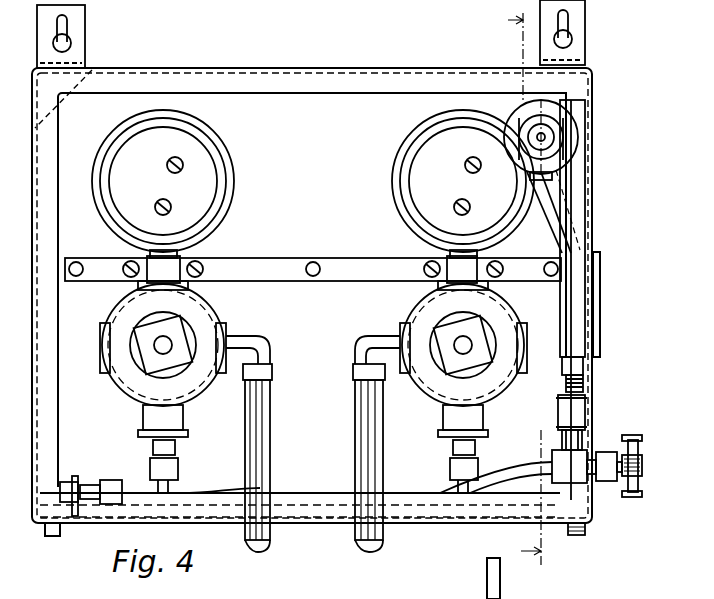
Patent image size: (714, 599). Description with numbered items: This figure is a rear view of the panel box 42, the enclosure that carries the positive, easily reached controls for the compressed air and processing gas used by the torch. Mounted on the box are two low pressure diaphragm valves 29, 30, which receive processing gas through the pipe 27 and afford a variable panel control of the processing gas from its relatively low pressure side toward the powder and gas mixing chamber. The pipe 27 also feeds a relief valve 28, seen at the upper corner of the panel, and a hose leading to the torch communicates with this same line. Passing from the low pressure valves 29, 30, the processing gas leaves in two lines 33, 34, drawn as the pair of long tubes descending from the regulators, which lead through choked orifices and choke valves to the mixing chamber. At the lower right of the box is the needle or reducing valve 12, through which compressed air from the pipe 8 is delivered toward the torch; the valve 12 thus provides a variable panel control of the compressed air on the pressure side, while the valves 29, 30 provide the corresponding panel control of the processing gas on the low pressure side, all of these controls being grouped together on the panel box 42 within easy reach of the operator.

The compressed air line 8 is at (582, 536).
The needle or reducing valve 12 is at (603, 486).
The processing gas pipe 27 is at (176, 497).
The relief valve 28 is at (512, 107).
The low pressure diaphragm valve 29 is at (498, 392).
The low pressure diaphragm valve 30 is at (200, 392).
The processing gas line 33 is at (272, 449).
The processing gas line 34 is at (380, 456).
The panel box 42 is at (316, 333).